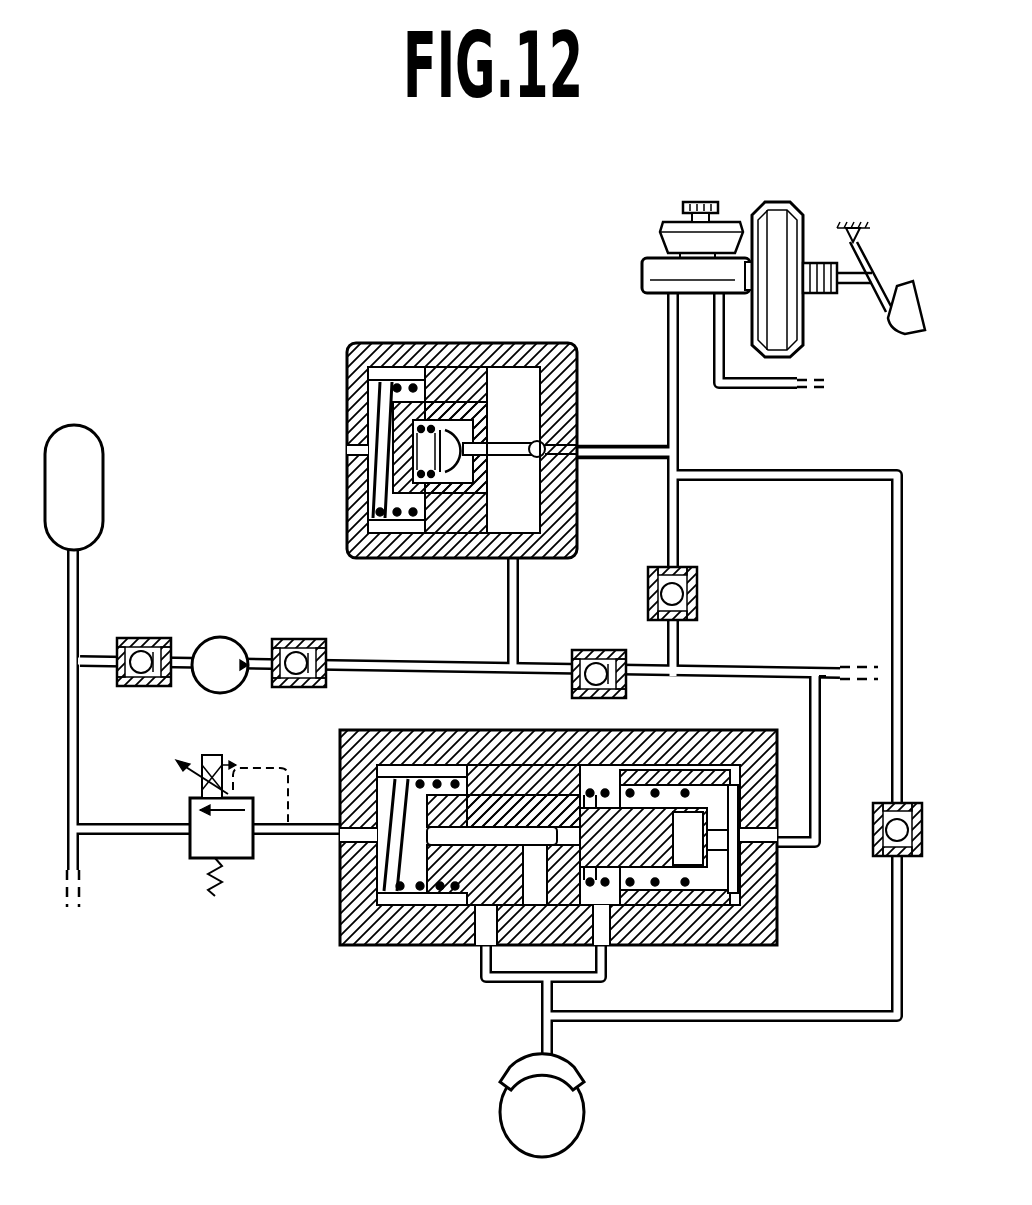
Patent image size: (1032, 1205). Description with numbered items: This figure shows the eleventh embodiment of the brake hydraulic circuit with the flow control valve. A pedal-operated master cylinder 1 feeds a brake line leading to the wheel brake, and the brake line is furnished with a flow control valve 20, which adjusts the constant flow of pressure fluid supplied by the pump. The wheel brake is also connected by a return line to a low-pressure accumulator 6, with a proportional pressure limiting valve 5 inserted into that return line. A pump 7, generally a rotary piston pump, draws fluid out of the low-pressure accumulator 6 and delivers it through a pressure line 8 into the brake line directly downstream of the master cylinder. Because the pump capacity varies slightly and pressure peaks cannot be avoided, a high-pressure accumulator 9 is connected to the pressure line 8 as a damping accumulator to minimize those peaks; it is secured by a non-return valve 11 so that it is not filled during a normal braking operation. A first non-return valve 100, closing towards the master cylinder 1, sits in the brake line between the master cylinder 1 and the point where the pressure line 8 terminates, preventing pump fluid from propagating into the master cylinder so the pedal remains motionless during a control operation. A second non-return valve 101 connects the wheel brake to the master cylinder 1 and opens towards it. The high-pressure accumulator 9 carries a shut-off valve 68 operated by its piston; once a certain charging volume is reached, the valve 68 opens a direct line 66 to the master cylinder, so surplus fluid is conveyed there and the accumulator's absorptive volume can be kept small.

The master cylinder 1 is at (628, 252).
The proportional pressure limiting valve 5 is at (245, 865).
The low-pressure accumulator 6 is at (92, 452).
The pump 7 is at (214, 640).
The pressure line 8 is at (416, 663).
The high-pressure accumulator 9 is at (362, 424).
The non-return valve 11 is at (591, 650).
The flow control valve 20 is at (767, 892).
The direct line 66 is at (630, 446).
The shut-off valve 68 is at (523, 385).
The first non-return valve 100 is at (699, 590).
The second non-return valve 101 is at (875, 822).